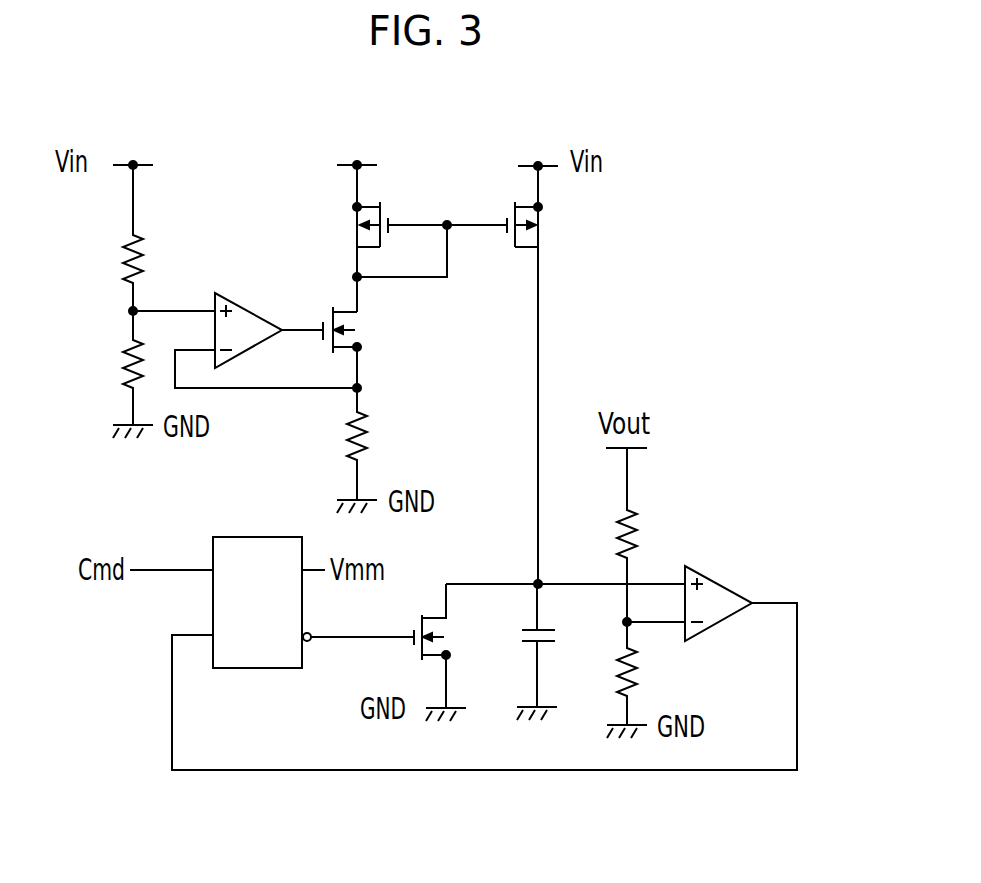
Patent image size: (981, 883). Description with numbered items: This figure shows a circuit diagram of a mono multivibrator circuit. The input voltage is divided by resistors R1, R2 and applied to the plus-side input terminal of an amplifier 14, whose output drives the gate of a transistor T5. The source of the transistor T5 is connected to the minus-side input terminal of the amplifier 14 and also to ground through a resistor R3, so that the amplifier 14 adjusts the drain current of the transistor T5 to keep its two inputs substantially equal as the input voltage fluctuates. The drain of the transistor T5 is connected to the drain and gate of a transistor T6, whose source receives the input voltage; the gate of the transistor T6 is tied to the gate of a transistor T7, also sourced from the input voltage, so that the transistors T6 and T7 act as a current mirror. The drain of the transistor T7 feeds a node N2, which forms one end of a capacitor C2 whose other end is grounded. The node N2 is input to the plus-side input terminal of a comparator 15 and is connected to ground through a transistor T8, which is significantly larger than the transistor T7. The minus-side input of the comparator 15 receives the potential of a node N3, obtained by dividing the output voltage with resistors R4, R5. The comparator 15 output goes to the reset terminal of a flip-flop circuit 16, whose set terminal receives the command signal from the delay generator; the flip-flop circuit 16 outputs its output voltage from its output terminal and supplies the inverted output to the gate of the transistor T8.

The resistor R1 is at (128, 253).
The resistor R2 is at (128, 356).
The resistor R3 is at (363, 428).
The resistor R4 is at (636, 525).
The resistor R5 is at (636, 667).
The transistor T5 is at (347, 316).
The transistor T6 is at (367, 240).
The transistor T7 is at (533, 238).
The transistor T8 is at (437, 620).
The capacitor C2 is at (548, 621).
The node N2 is at (565, 567).
The node N3 is at (654, 605).
The amplifier 14 is at (259, 316).
The comparator 15 is at (727, 618).
The flip-flop circuit 16 is at (255, 669).